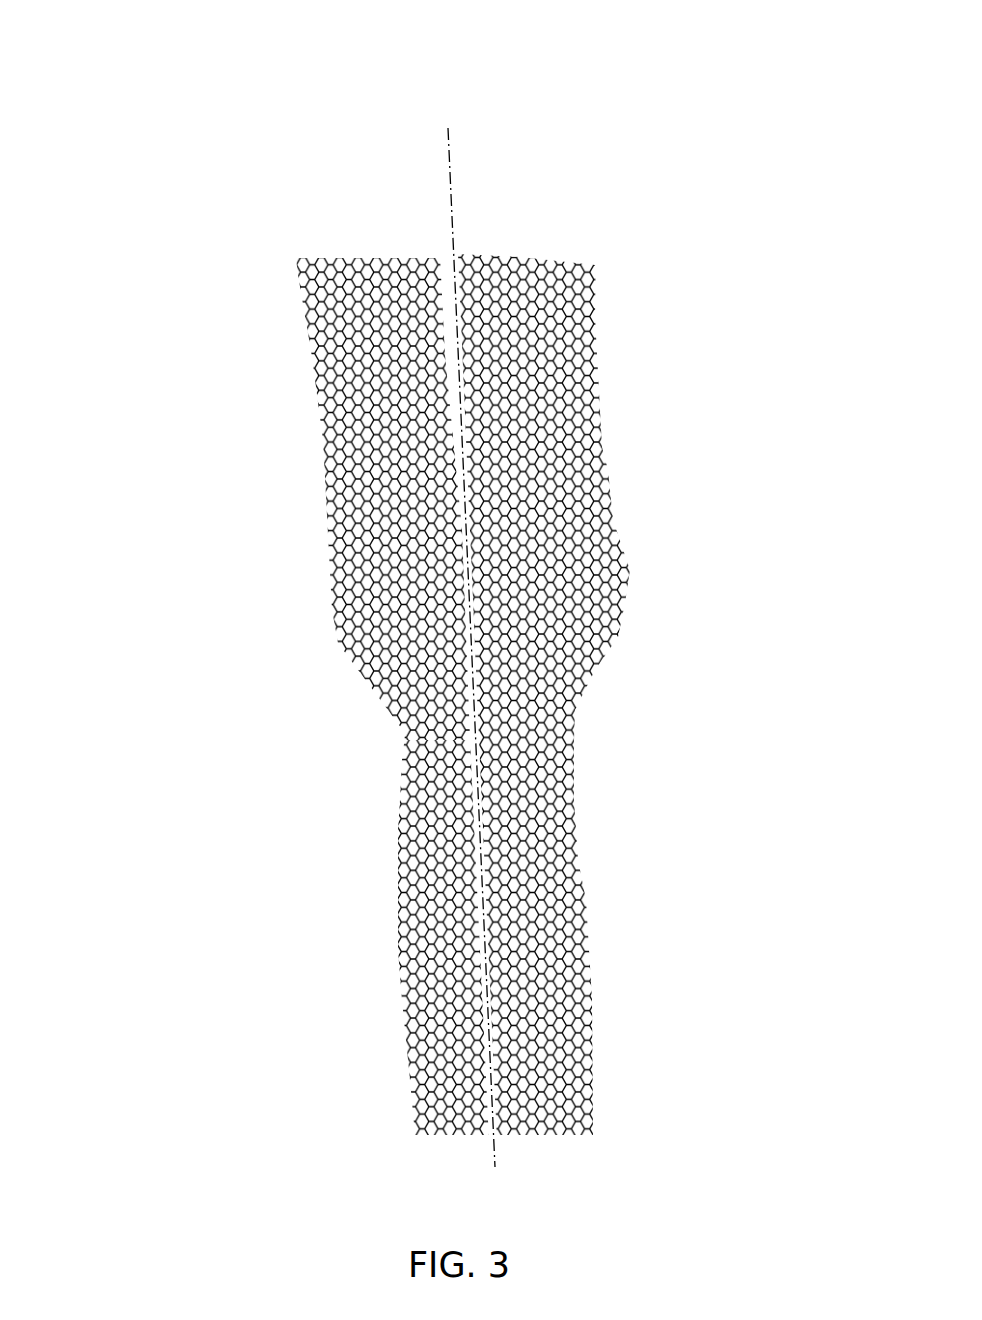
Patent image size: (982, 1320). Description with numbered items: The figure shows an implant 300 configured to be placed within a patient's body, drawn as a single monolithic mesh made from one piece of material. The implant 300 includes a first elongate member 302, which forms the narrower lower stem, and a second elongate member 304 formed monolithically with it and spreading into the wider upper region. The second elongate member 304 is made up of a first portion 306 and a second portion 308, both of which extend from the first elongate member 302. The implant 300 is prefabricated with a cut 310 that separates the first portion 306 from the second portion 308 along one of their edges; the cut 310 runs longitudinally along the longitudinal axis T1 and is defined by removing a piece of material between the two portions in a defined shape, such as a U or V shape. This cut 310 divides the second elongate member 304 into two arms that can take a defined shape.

The implant 300 is at (104, 99).
The first elongate member 302 is at (395, 1018).
The second elongate member 304 is at (327, 486).
The first portion 306 is at (294, 268).
The second portion 308 is at (602, 447).
The cut 310 is at (470, 305).
The longitudinal axis T1 is at (450, 162).